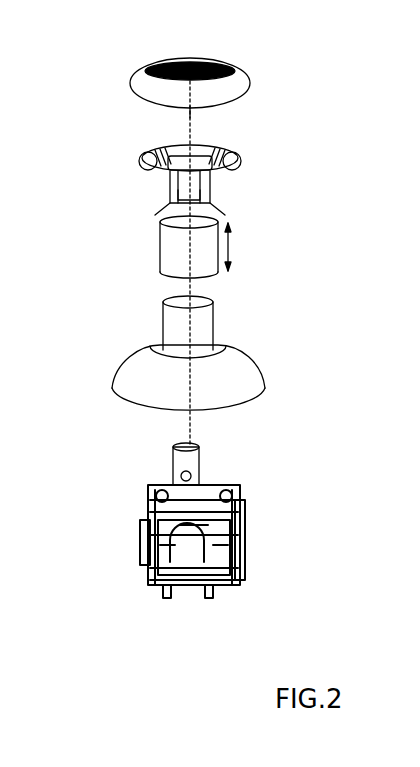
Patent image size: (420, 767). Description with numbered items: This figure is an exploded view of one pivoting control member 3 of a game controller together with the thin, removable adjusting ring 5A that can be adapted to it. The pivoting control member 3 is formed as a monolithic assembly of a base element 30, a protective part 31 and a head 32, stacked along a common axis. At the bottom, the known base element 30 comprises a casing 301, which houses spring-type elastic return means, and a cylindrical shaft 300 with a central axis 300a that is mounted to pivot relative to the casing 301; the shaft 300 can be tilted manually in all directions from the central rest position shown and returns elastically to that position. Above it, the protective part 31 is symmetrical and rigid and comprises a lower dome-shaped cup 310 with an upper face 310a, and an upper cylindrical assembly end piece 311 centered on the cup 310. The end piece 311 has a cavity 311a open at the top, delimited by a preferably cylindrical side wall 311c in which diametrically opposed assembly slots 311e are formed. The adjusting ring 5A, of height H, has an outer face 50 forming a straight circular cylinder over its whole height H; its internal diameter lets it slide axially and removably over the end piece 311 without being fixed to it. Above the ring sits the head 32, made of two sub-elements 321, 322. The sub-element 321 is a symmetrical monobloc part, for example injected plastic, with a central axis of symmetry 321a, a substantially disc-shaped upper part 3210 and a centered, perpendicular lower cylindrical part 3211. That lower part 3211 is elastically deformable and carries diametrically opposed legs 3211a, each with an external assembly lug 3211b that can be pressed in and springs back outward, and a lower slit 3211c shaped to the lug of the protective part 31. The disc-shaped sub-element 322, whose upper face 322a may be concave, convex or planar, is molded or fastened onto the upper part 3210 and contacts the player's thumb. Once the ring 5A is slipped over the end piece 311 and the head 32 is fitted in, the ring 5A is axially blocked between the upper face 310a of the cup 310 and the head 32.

The pivoting control member 3 is at (330, 297).
The base element 30 is at (244, 520).
The cylindrical shaft 300 is at (200, 464).
The central axis 300a is at (196, 420).
The casing 301 is at (233, 492).
The protective part 31 is at (194, 362).
The dome-shaped cup 310 is at (210, 388).
The upper face of the cup 310a is at (220, 349).
The cylindrical assembly end piece 311 is at (170, 319).
The cavity 311a is at (206, 300).
The side wall 311c is at (163, 340).
The assembly slots 311e is at (165, 318).
The head 32 is at (317, 137).
The sub-element 321 is at (175, 198).
The central axis of symmetry 321a is at (192, 114).
The disc-shaped upper part 3210 is at (140, 157).
The lower cylindrical part 3211 is at (199, 203).
The legs 3211a is at (172, 205).
The external assembly lug 3211b is at (168, 180).
The lower slit 3211c is at (220, 210).
The sub-element 322 is at (166, 82).
The upper face 322a is at (216, 66).
The outer face 50 is at (168, 244).
The height H is at (236, 247).
The adjusting ring 5A is at (256, 263).